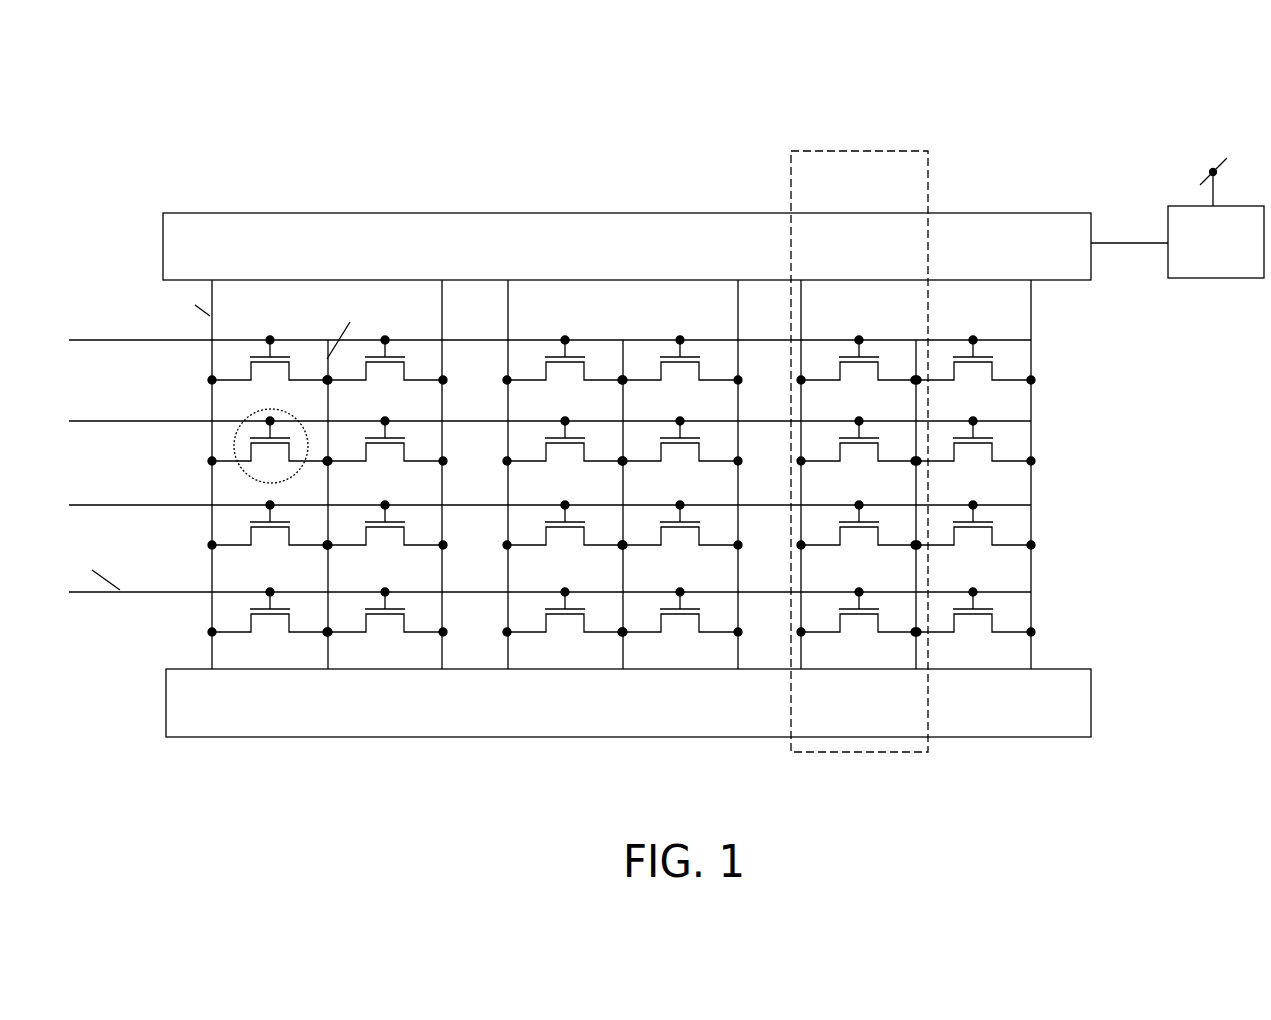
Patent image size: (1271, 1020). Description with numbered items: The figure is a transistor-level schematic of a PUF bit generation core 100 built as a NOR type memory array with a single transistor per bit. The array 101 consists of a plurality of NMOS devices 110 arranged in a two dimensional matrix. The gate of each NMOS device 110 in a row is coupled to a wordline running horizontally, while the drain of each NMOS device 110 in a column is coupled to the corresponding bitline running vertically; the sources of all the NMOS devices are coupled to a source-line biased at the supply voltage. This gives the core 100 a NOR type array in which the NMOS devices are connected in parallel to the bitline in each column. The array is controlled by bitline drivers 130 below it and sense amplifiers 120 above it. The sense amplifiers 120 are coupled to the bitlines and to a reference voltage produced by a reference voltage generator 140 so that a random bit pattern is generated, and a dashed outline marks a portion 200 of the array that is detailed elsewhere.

The PUF bit generation core 100 is at (1140, 72).
The array 101 is at (1098, 473).
The NMOS device 110 is at (233, 450).
The sense amplifiers 120 is at (790, 264).
The bitline drivers 130 is at (772, 722).
The reference voltage generator 140 is at (1190, 254).
The portion shown in Fig. 2 200 is at (928, 145).